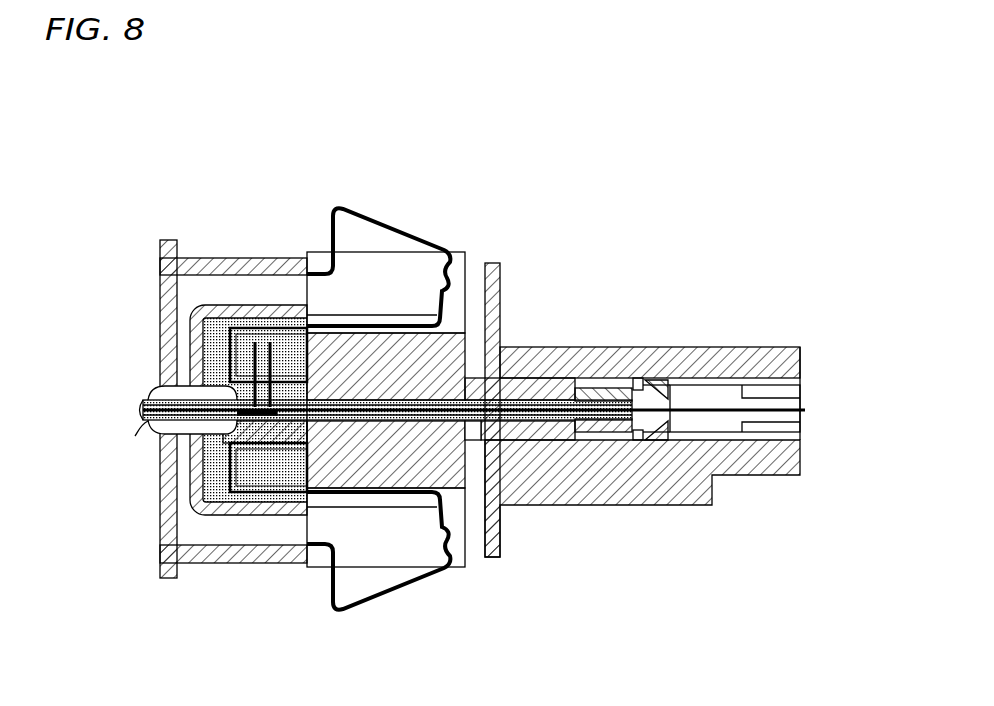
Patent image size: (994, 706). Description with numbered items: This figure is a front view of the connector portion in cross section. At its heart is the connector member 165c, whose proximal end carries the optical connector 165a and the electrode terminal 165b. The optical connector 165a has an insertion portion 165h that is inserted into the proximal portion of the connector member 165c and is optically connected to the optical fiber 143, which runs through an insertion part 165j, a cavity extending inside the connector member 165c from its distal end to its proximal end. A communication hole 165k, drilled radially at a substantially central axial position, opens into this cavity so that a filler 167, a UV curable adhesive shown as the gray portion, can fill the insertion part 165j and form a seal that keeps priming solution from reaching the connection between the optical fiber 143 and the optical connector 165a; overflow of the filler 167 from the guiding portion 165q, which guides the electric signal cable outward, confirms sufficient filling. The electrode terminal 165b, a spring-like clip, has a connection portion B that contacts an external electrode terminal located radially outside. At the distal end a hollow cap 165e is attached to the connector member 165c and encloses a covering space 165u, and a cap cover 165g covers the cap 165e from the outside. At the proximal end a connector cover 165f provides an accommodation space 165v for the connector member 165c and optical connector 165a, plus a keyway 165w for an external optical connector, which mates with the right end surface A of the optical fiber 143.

The optical connector 165a is at (782, 380).
The electrode terminal 165b is at (365, 218).
The connector member 165c is at (318, 252).
The cap 165e is at (207, 516).
The connector cover 165f is at (645, 347).
The cap cover 165g is at (245, 258).
The insertion portion 165h is at (597, 388).
The insertion part 165j is at (483, 376).
The communication hole 165k is at (474, 422).
The guiding portion 165q is at (197, 388).
The covering space 165u is at (253, 510).
The accommodation space 165v is at (712, 378).
The keyway 165w is at (593, 485).
The filler 167 is at (205, 480).
The optical fiber 143 is at (730, 418).
The right end surface A is at (805, 410).
The connection portion B is at (408, 236).